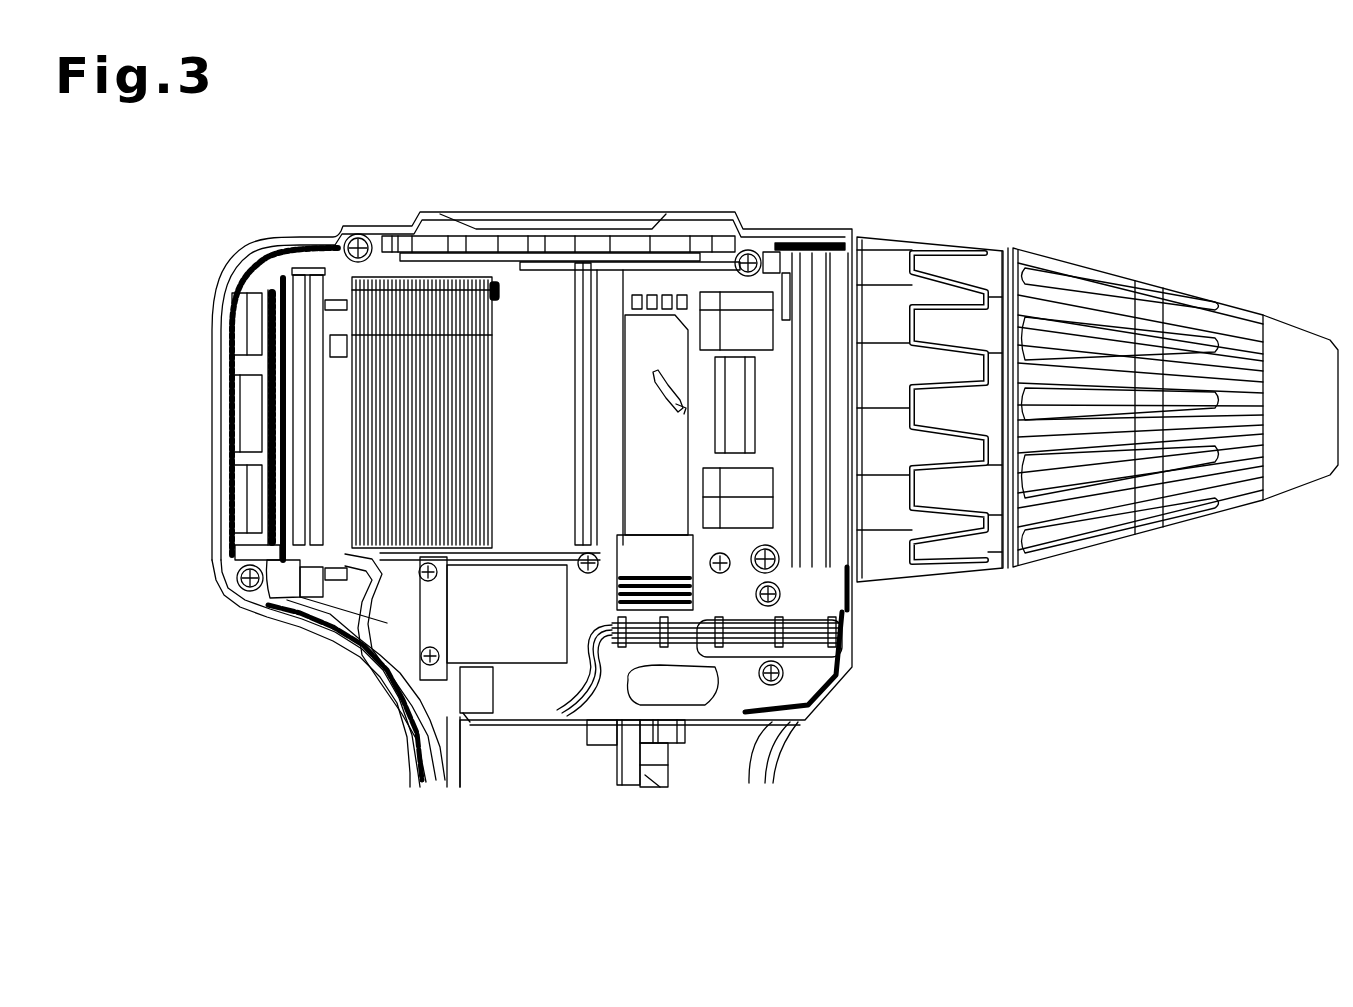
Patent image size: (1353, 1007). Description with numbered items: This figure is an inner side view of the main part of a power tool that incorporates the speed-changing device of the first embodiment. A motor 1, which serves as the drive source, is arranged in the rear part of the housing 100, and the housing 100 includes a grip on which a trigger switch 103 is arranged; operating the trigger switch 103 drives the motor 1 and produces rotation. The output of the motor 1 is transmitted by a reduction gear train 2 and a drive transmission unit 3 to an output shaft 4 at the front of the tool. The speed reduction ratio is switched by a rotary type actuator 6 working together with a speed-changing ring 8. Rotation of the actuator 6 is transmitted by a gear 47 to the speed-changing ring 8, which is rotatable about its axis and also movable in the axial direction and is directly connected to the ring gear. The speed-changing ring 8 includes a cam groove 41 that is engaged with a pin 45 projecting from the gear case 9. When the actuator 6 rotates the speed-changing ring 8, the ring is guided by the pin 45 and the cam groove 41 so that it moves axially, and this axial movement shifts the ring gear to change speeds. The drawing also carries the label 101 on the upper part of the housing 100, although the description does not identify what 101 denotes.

The motor 1 is at (420, 285).
The reduction gear train 2 is at (672, 242).
The drive transmission unit 3 is at (883, 437).
The output shaft 4 is at (1082, 266).
The rotary type actuator 6 is at (800, 647).
The speed-changing ring 8 is at (679, 330).
The gear case 9 is at (622, 293).
The cam groove 41 is at (665, 393).
The pin 45 is at (679, 416).
The gear 47 is at (612, 590).
The housing 100 is at (212, 330).
The body housing 101 is at (752, 237).
The trigger switch 103 is at (778, 752).